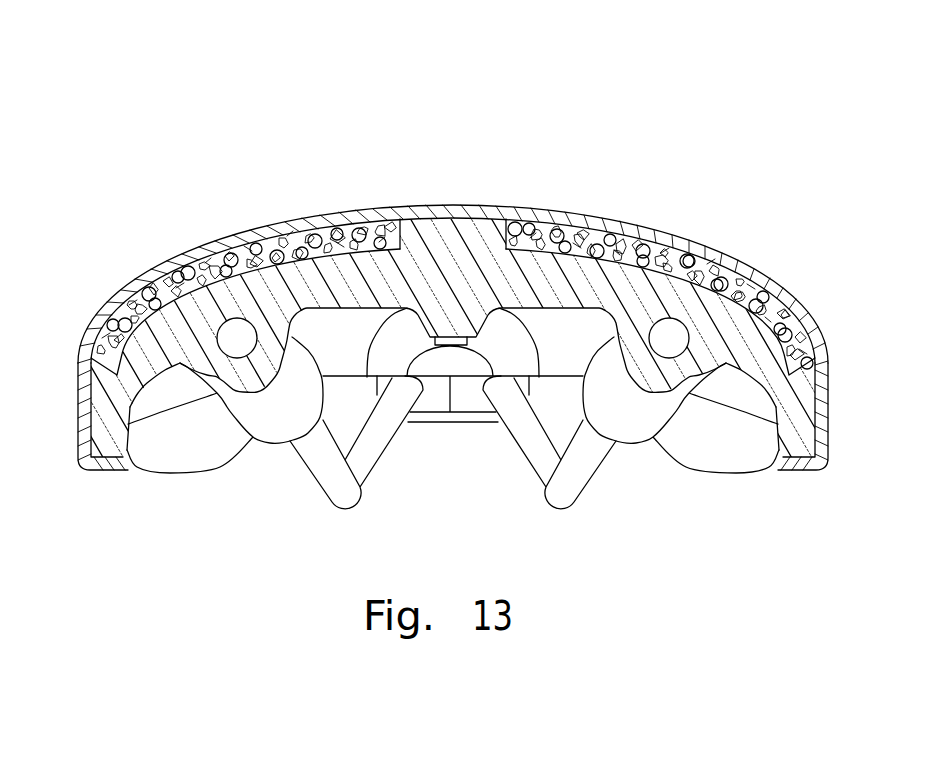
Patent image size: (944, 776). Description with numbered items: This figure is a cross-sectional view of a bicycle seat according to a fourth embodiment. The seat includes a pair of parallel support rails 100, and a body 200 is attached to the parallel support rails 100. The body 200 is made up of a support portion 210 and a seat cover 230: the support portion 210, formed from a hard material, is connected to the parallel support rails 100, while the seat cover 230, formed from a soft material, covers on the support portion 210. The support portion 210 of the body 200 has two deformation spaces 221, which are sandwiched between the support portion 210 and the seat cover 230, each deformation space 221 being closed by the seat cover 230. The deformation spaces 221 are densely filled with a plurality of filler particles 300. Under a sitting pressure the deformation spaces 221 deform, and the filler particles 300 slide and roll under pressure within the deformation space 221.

The parallel support rails 100 is at (580, 478).
The body 200 is at (453, 249).
The support portion 210 is at (432, 235).
The deformation spaces 221 is at (503, 237).
The seat cover 230 is at (455, 243).
The filler particles 300 is at (714, 272).